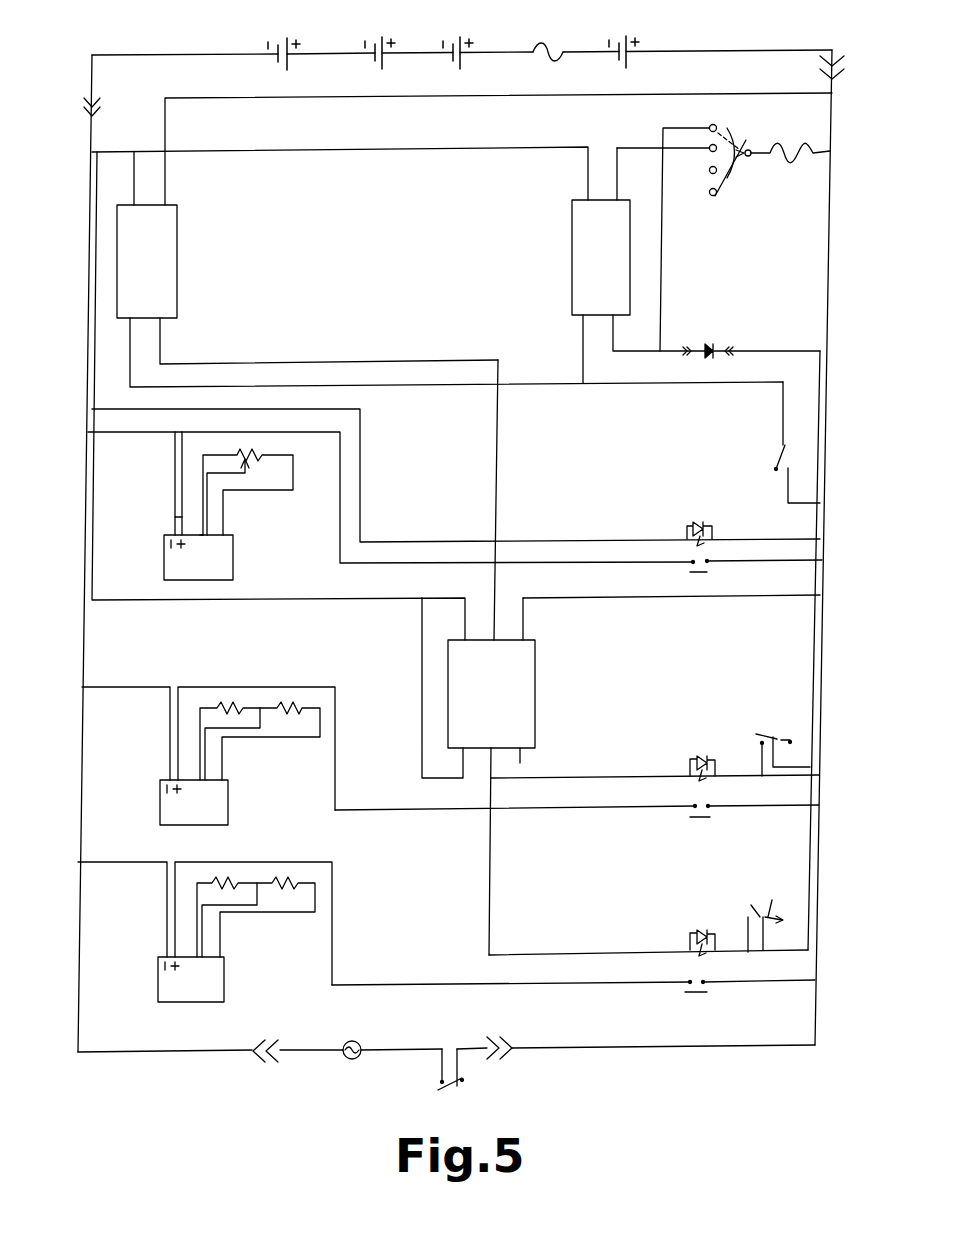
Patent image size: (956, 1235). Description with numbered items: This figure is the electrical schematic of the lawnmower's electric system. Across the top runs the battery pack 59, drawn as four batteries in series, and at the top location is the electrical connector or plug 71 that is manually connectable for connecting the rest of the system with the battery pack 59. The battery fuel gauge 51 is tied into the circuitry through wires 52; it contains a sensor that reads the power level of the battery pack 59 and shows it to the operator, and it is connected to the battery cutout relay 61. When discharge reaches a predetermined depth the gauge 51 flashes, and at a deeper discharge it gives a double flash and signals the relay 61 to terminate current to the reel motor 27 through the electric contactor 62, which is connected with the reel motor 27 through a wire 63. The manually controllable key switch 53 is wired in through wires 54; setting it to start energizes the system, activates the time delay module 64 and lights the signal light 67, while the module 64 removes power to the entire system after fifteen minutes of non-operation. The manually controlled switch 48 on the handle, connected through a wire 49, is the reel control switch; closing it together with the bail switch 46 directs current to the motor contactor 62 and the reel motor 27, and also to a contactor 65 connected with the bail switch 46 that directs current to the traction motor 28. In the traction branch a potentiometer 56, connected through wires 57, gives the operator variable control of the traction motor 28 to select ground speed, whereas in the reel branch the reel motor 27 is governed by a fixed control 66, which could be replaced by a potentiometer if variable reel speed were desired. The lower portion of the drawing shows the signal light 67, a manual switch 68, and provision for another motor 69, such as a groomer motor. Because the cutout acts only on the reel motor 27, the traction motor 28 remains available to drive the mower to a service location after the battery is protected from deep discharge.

The battery pack 59 is at (404, 36).
The electrical connector or plug 71 is at (88, 118).
The wires 52 is at (134, 186).
The battery fuel gauge 51 is at (160, 293).
The time delay module 64 is at (578, 232).
The key switch 53 is at (750, 176).
The wires 54 is at (641, 150).
The bail switch 46 is at (768, 450).
The contactor 65 is at (710, 568).
The potentiometer 56 is at (272, 449).
The wires 57 is at (176, 517).
The traction motor 28 is at (250, 511).
The battery cutout relay 61 is at (527, 723).
The reel motor 27 is at (209, 730).
The fixed control 66 is at (284, 703).
The another motor 69 is at (217, 994).
The signal light 67 is at (360, 1045).
The manual switch 68 is at (475, 1071).
The wire 63 is at (562, 810).
The electric contactor 62 is at (683, 815).
The wire 49 is at (738, 776).
The switch 48 is at (792, 720).